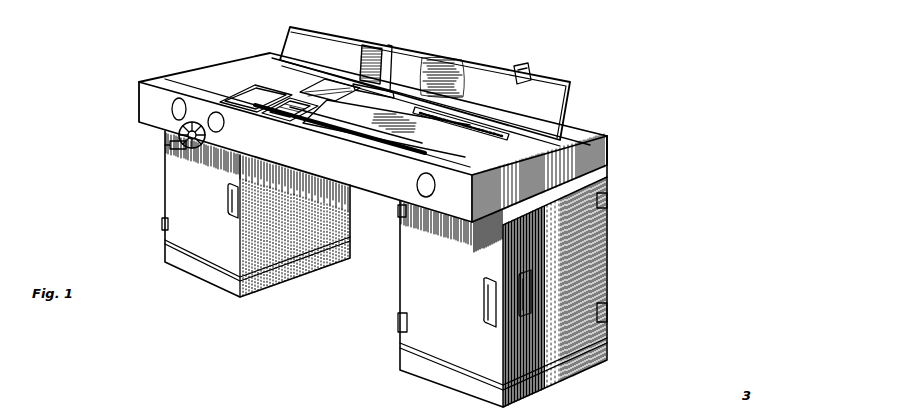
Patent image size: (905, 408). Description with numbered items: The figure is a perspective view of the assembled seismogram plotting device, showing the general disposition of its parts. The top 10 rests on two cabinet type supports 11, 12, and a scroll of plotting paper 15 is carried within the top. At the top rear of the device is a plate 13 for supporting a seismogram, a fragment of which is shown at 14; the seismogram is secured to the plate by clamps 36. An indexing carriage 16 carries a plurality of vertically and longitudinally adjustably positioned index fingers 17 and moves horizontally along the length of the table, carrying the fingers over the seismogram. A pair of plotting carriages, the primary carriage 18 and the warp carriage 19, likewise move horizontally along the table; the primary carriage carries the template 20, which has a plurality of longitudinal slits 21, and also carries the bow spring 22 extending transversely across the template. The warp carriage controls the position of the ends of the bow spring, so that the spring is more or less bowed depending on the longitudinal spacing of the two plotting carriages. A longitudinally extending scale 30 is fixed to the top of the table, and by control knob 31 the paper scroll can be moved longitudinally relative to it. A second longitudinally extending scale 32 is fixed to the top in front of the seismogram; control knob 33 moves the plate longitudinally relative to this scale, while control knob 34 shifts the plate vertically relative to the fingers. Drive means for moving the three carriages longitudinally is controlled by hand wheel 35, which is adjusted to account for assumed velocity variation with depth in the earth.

The top 10 is at (352, 186).
The cabinet type support 11 is at (257, 286).
The cabinet type support 12 is at (399, 352).
The plate 13 is at (566, 95).
The seismogram 14 is at (477, 80).
The scroll of plotting paper 15 is at (413, 133).
The indexing carriage 16 is at (360, 78).
The index fingers 17 is at (395, 70).
The primary carriage 18 is at (318, 78).
The warp carriage 19 is at (347, 88).
The template 20 is at (325, 130).
The longitudinal slits 21 is at (380, 87).
The bow spring 22 is at (303, 128).
The scale 30 is at (520, 137).
The control knob 31 is at (425, 197).
The scale 32 is at (513, 122).
The control knob 33 is at (175, 113).
The control knob 34 is at (200, 152).
The hand wheel 35 is at (168, 145).
The clamps 36 is at (527, 67).